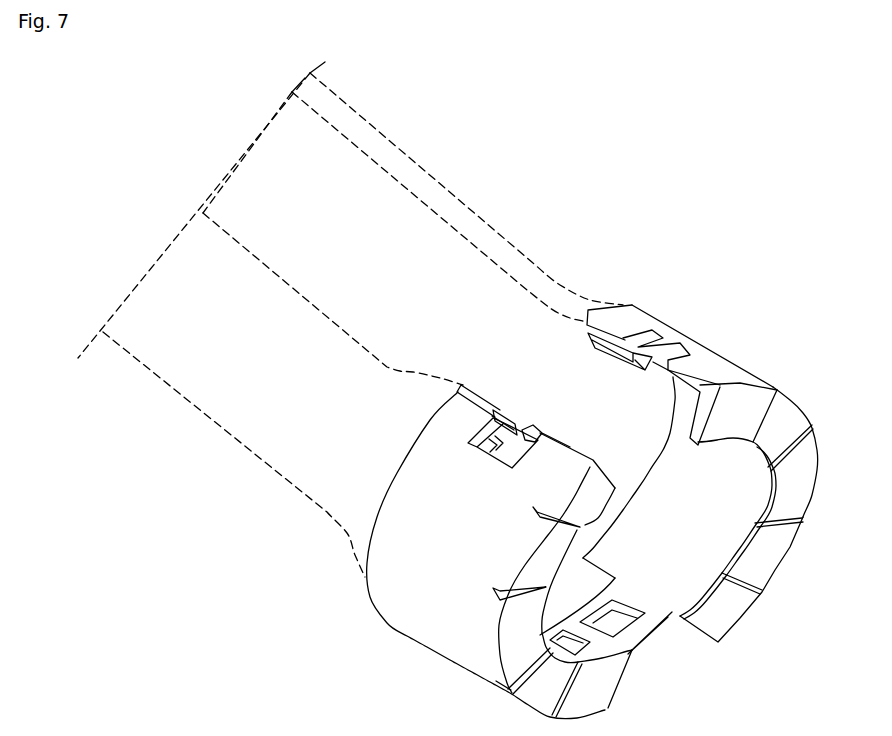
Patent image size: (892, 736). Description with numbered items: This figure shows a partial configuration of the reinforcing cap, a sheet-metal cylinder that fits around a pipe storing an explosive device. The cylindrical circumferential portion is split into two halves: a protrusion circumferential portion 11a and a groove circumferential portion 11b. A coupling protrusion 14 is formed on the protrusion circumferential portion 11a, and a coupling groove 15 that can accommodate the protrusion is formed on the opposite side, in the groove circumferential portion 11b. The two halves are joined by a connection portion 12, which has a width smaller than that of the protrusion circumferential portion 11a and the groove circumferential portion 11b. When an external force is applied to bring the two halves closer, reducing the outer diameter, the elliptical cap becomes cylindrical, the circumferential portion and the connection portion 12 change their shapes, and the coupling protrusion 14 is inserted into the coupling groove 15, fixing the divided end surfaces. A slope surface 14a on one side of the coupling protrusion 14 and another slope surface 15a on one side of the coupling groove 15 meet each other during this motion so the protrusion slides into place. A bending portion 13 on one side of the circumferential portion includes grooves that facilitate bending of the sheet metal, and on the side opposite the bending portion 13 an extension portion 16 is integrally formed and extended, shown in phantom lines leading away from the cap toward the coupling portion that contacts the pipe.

The protrusion circumferential portion 11a is at (727, 368).
The groove circumferential portion 11b is at (420, 623).
The connection portion 12 is at (603, 648).
The bending portion 13 is at (733, 612).
The coupling protrusion 14 is at (635, 330).
The slope surface 14a is at (595, 342).
The coupling groove 15 is at (488, 452).
The slope surface 15a is at (508, 412).
The extension portion 16 is at (252, 417).